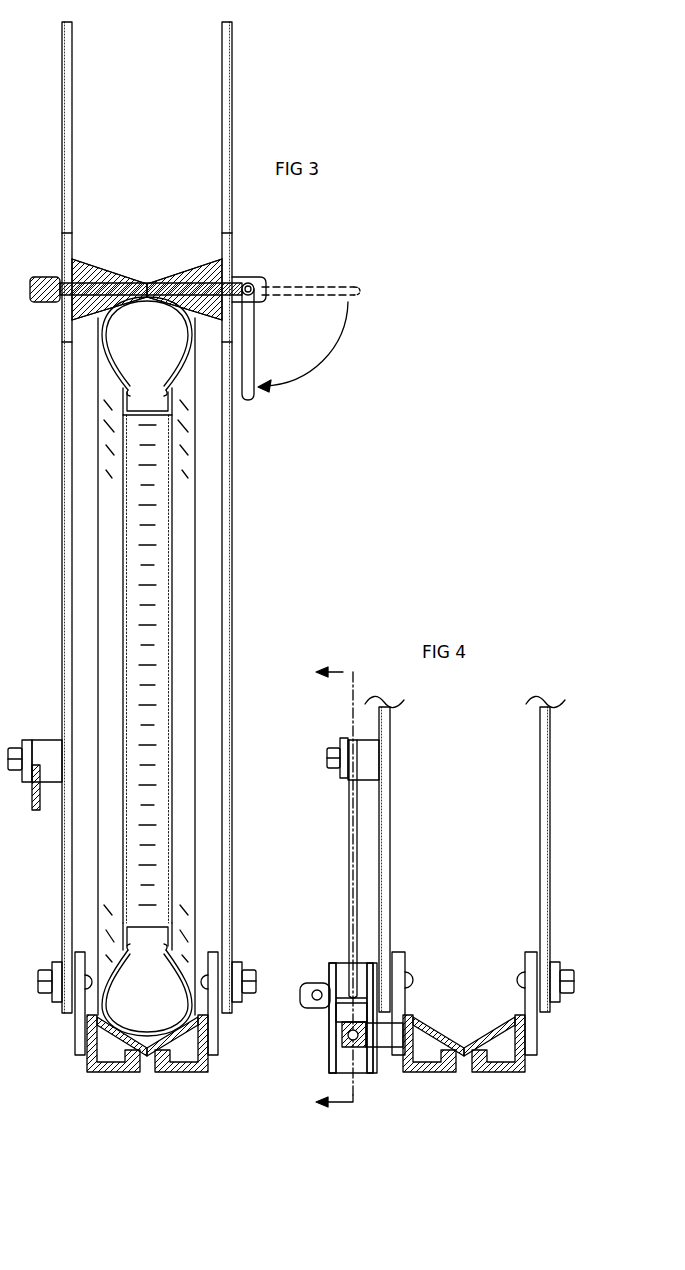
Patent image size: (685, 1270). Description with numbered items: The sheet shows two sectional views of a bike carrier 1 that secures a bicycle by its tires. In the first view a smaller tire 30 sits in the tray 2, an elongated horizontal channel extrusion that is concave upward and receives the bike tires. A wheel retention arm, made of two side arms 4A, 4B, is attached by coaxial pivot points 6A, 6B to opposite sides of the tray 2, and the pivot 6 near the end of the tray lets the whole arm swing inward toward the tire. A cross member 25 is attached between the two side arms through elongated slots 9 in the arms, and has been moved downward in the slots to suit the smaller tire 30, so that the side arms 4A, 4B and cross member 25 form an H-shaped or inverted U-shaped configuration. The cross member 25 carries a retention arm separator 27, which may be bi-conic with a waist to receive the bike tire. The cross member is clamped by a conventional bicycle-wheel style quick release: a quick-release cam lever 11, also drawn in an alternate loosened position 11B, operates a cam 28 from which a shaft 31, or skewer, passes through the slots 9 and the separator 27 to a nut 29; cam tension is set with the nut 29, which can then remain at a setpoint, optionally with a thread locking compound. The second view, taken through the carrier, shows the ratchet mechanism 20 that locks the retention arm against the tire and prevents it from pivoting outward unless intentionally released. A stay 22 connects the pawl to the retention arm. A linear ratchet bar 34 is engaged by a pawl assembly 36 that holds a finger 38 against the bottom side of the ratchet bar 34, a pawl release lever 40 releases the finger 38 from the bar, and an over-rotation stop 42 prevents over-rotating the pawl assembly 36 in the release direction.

In FIG. 3, the bike carrier 1 is at (8, 122).
In FIG. 3, the tray 2 is at (176, 1073).
In FIG. 4, the tray 2 is at (454, 1041).
In FIG. 3, the side arm 4A is at (62, 496).
In FIG. 4, the side arm 4A is at (390, 856).
In FIG. 3, the side arm 4B is at (232, 496).
In FIG. 4, the side arm 4B is at (540, 856).
In FIG. 4, the pivot 6 is at (326, 888).
In FIG. 3, the pivot point 6A is at (44, 969).
In FIG. 3, the pivot point 6B is at (244, 969).
In FIG. 3, the elongated slots 9 is at (73, 246).
In FIG. 3, the quick-release cam lever 11 is at (255, 336).
In FIG. 3, the loosened position 11B is at (317, 284).
In FIG. 4, the ratchet mechanism 20 is at (332, 954).
In FIG. 3, the stay 22 is at (34, 805).
In FIG. 4, the stay 22 is at (349, 846).
In FIG. 3, the cross member 25 is at (137, 266).
In FIG. 3, the retention arm separator 27 is at (183, 282).
In FIG. 3, the cam 28 is at (246, 276).
In FIG. 3, the nut 29 is at (50, 278).
In FIG. 3, the smaller tire 30 is at (157, 357).
In FIG. 3, the shaft 31 is at (104, 284).
In FIG. 4, the linear ratchet bar 34 is at (342, 1048).
In FIG. 4, the pawl assembly 36 is at (330, 1067).
In FIG. 4, the finger 38 is at (361, 1068).
In FIG. 4, the pawl release lever 40 is at (316, 982).
In FIG. 4, the over-rotation stop 42 is at (342, 1013).